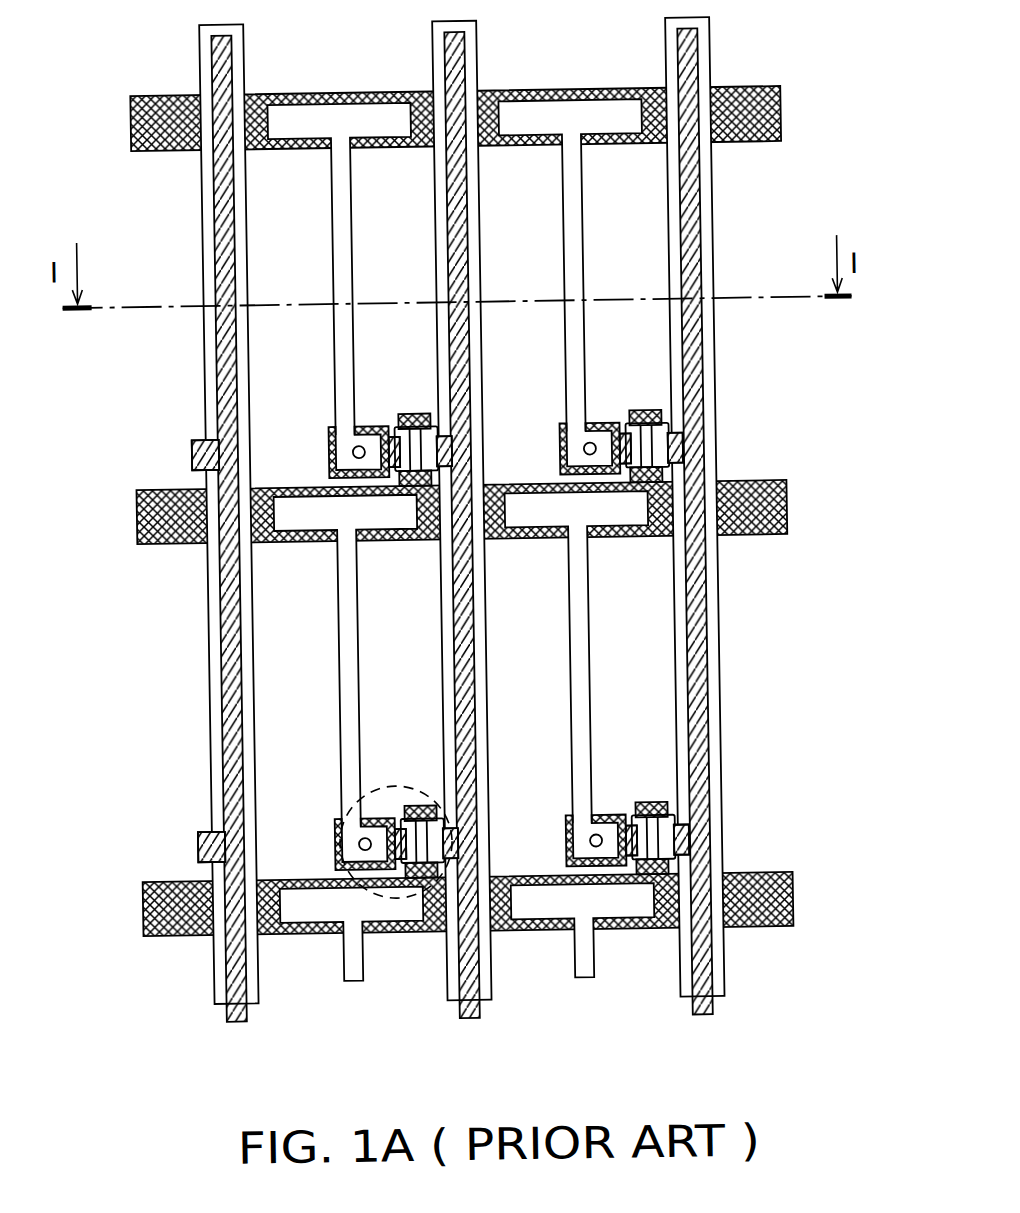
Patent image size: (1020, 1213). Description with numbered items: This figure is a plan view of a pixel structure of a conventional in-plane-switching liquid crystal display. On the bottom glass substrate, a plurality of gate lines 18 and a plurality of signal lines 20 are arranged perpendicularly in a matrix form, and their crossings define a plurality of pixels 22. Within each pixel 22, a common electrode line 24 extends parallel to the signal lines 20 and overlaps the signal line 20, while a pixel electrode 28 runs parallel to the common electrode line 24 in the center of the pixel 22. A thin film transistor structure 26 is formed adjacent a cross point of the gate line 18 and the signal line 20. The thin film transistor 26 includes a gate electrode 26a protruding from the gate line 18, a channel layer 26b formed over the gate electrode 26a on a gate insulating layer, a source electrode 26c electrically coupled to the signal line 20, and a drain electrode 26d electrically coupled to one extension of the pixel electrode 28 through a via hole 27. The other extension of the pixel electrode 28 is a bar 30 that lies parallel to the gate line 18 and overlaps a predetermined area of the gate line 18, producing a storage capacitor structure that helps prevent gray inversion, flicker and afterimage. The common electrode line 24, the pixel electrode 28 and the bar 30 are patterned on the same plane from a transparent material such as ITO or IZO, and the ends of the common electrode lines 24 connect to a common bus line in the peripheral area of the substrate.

The gate line 18 is at (787, 901).
The signal line 20 is at (695, 647).
The pixel 22 is at (647, 221).
The common electrode line 24 is at (710, 339).
The thin film transistor structure 26 is at (399, 852).
The gate electrode 26a is at (413, 806).
The channel layer 26b is at (420, 934).
The source electrode 26c is at (444, 805).
The drain electrode 26d is at (398, 809).
The via hole 27 is at (356, 841).
The pixel electrode 28 is at (574, 242).
The bar 30 is at (546, 113).